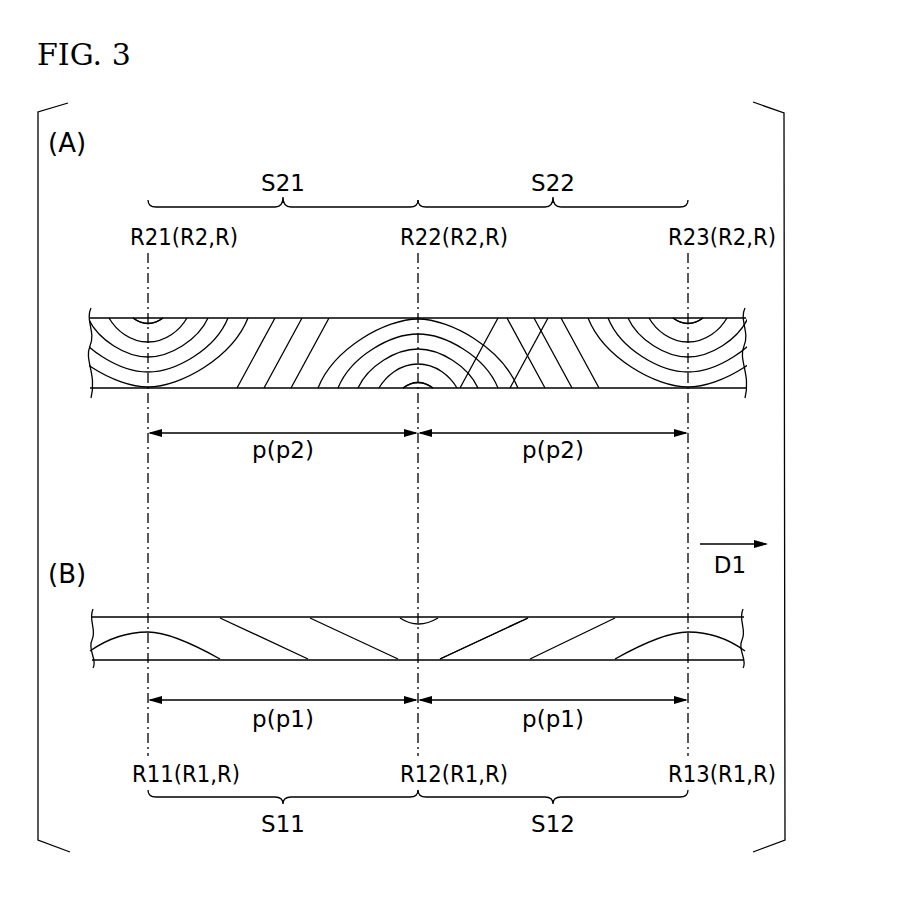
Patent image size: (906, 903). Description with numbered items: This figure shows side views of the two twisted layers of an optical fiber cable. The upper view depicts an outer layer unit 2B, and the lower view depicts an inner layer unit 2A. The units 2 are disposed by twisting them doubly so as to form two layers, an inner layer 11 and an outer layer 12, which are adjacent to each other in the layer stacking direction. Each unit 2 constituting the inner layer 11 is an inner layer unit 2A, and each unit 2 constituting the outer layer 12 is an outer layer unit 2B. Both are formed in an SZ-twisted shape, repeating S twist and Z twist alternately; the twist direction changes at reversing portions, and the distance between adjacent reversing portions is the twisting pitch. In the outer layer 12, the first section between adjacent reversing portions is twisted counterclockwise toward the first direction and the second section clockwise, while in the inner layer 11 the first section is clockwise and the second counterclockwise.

The outer layer 12 is at (616, 319).
The outer layer unit 2B is at (474, 319).
The unit 2 is at (527, 318).
The inner layer 11 is at (587, 623).
The inner layer unit 2A is at (476, 623).